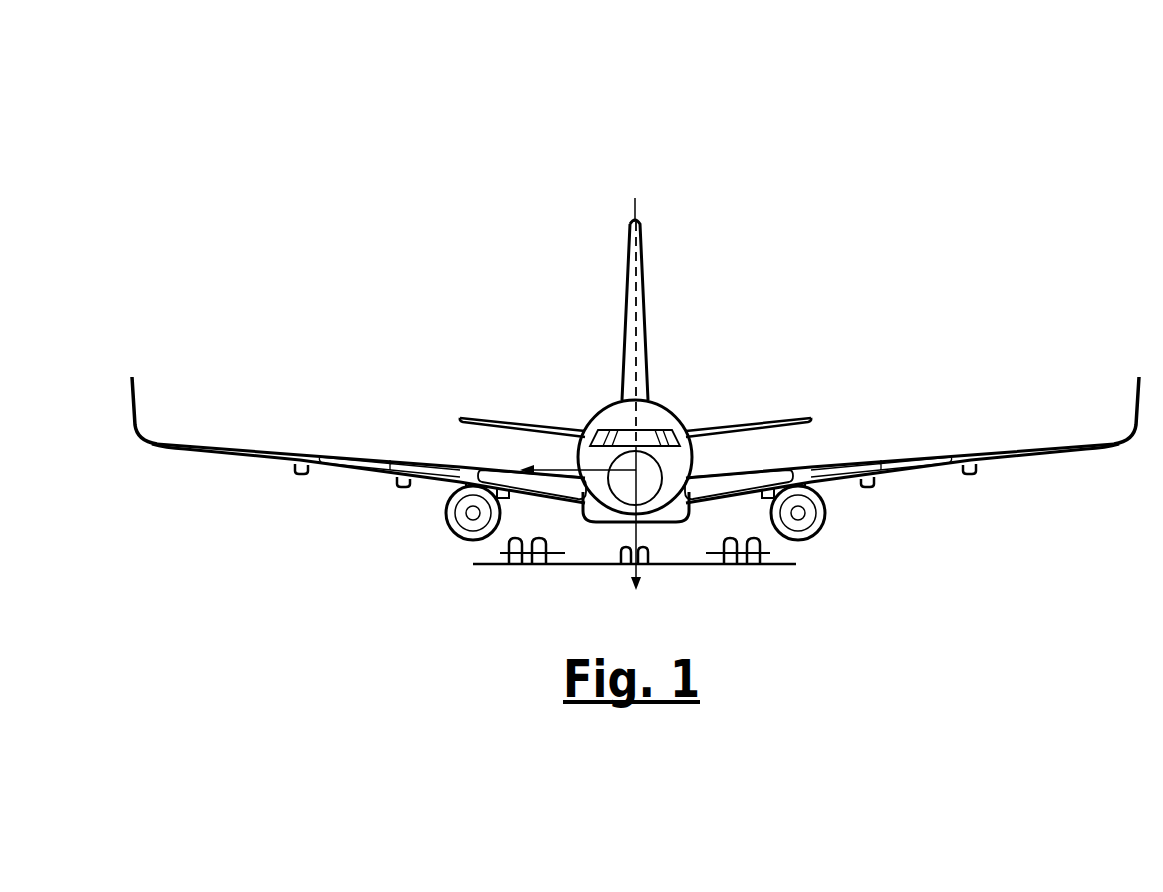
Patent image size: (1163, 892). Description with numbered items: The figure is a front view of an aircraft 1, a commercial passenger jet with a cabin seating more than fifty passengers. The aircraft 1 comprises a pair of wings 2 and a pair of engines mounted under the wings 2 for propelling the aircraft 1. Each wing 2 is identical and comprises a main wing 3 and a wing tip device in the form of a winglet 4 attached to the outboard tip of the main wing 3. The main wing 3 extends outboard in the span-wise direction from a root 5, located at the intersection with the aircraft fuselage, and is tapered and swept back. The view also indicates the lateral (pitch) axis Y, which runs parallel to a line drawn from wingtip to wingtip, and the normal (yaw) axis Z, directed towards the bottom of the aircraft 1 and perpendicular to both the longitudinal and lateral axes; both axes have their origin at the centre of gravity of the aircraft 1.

The aircraft 1 is at (403, 133).
The wing 2 is at (333, 322).
The main wing 3 is at (322, 438).
The winglet 4 is at (160, 398).
The root 5 is at (578, 470).